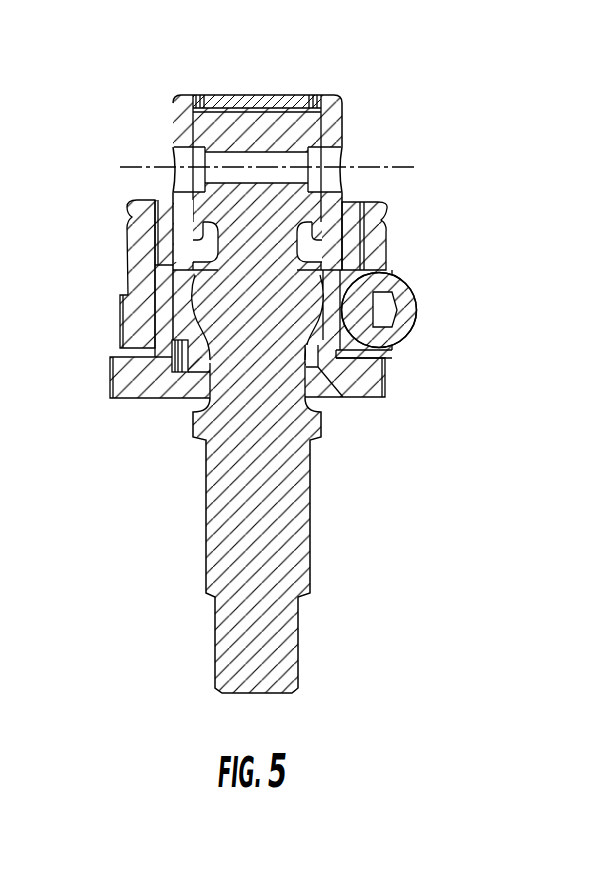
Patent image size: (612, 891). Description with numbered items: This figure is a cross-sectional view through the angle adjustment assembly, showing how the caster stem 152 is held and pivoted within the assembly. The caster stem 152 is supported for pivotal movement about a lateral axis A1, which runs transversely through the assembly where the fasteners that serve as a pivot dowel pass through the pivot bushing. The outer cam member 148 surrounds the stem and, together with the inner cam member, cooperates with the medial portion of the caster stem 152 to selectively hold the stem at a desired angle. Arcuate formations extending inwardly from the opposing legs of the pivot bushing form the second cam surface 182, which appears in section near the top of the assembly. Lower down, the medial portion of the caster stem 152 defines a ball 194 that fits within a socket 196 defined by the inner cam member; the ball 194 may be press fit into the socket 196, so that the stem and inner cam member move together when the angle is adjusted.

The lateral axis A1 is at (395, 166).
The outer cam member 148 is at (100, 272).
The caster stem 152 is at (84, 374).
The second cam surface 182 is at (300, 232).
The ball 194 is at (305, 265).
The socket 196 is at (199, 372).